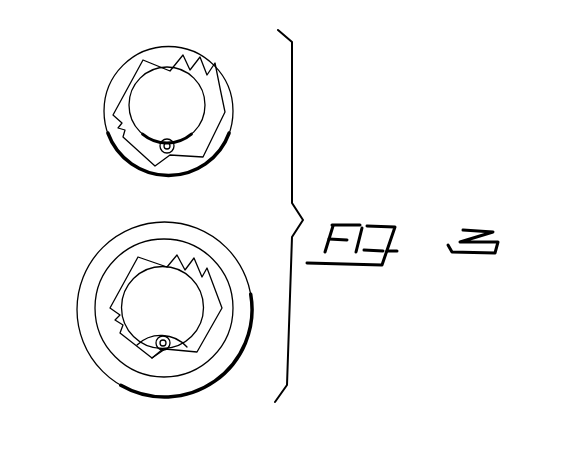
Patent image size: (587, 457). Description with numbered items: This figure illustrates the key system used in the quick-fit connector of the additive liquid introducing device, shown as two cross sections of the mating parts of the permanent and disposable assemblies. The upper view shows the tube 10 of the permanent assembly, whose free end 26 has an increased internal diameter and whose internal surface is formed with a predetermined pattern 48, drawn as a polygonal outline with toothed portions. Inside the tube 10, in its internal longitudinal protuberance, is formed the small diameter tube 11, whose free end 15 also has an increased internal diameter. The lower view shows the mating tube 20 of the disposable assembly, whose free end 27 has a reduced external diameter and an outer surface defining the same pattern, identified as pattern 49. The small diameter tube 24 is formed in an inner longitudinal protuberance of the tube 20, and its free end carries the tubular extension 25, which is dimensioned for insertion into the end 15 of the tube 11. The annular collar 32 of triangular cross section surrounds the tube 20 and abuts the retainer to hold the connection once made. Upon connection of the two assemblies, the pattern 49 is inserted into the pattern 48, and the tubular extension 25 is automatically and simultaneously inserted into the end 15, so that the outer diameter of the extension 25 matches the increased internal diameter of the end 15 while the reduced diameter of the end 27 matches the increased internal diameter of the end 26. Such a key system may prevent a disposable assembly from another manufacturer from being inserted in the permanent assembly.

The tube 10 is at (118, 109).
The small diameter tube 11 is at (165, 140).
The free end 15 is at (170, 140).
The free end 26 is at (167, 52).
The predetermined pattern 48 is at (135, 72).
The tube 20 is at (123, 350).
The small diameter tube 24 is at (160, 338).
The tubular extension 25 is at (163, 338).
The free end 27 is at (152, 353).
The annular collar 32 is at (238, 288).
The pattern 49 is at (113, 295).